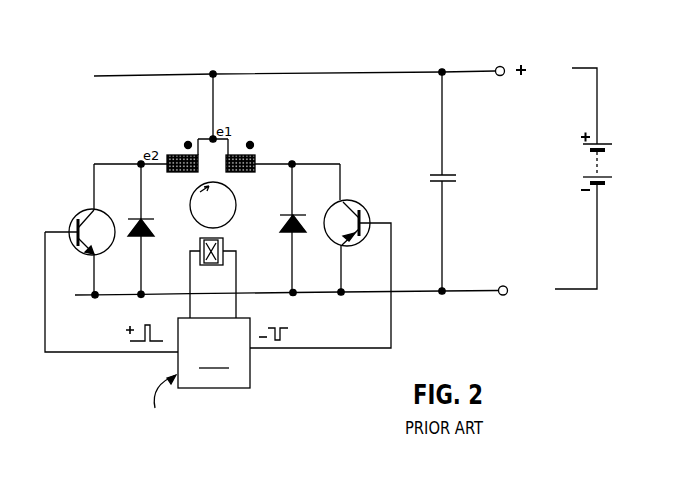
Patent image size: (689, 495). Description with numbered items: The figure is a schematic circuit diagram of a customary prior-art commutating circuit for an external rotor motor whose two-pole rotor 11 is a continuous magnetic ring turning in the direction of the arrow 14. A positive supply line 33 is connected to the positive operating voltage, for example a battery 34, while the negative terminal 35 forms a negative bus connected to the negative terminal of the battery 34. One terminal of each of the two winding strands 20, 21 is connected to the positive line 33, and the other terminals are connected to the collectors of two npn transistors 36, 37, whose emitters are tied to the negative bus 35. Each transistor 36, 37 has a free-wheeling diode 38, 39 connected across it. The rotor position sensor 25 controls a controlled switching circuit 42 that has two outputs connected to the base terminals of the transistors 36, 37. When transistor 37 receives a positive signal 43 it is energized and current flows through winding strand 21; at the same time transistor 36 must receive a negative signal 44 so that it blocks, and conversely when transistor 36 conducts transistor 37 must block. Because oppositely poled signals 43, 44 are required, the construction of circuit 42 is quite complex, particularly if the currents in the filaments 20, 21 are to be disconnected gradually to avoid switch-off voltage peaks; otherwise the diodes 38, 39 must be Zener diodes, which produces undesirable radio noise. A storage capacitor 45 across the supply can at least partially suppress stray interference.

The rotor 11 is at (230, 214).
The arrow 14 is at (196, 192).
The winding strand 20 is at (235, 153).
The winding strand 21 is at (184, 153).
The rotor position sensor 25 is at (225, 245).
The positive supply line 33 is at (358, 73).
The battery 34 is at (607, 166).
The negative terminal 35 is at (418, 291).
The npn transistor 36 is at (361, 208).
The npn transistor 37 is at (90, 211).
The free-wheeling diode 38 is at (300, 222).
The free-wheeling diode 39 is at (147, 222).
The controlled switching circuit 42 is at (147, 348).
The positive signal 43 is at (143, 320).
The negative signal 44 is at (290, 330).
The storage capacitor 45 is at (446, 172).